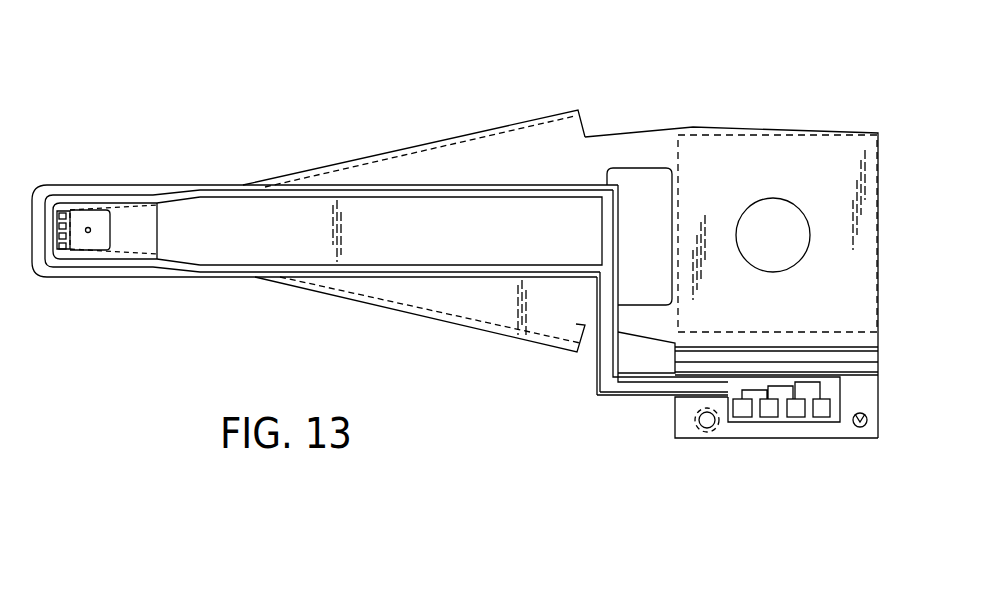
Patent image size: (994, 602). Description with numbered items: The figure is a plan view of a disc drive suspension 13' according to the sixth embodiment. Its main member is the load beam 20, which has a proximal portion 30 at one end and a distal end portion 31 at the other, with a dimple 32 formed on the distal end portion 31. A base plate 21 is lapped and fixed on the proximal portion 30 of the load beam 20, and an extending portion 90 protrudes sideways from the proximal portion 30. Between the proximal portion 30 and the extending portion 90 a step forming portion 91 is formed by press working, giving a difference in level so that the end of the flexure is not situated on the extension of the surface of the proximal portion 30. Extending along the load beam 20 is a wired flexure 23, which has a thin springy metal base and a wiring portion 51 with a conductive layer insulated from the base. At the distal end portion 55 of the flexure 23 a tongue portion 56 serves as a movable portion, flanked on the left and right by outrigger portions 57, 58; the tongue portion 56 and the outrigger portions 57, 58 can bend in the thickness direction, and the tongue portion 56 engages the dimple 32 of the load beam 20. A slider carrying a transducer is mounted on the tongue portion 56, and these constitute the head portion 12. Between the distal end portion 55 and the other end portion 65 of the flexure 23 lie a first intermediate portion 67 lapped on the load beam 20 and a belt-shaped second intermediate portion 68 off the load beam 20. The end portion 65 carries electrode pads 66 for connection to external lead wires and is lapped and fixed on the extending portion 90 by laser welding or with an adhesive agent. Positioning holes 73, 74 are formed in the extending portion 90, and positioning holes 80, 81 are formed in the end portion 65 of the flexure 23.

The head portion 12 is at (87, 176).
The suspension 13' is at (456, 277).
The load beam 20 is at (542, 137).
The base plate 21 is at (727, 138).
The flexure 23 is at (415, 283).
The proximal portion 30 is at (828, 143).
The distal end portion 31 is at (116, 260).
The dimple 32 is at (78, 262).
The wiring portion 51 is at (605, 378).
The distal end portion 55 is at (38, 202).
The tongue portion 56 is at (112, 226).
The outrigger portion 57 is at (109, 195).
The outrigger portion 58 is at (95, 270).
The end portion 65 is at (813, 433).
The electrode pads 66 is at (815, 418).
The first intermediate portion 67 is at (502, 187).
The second intermediate portion 68 is at (597, 357).
The positioning hole 73 is at (862, 428).
The positioning hole 74 is at (720, 437).
The positioning hole 80 is at (853, 427).
The positioning hole 81 is at (703, 427).
The extending portion 90 is at (675, 418).
The step forming portion 91 is at (822, 352).